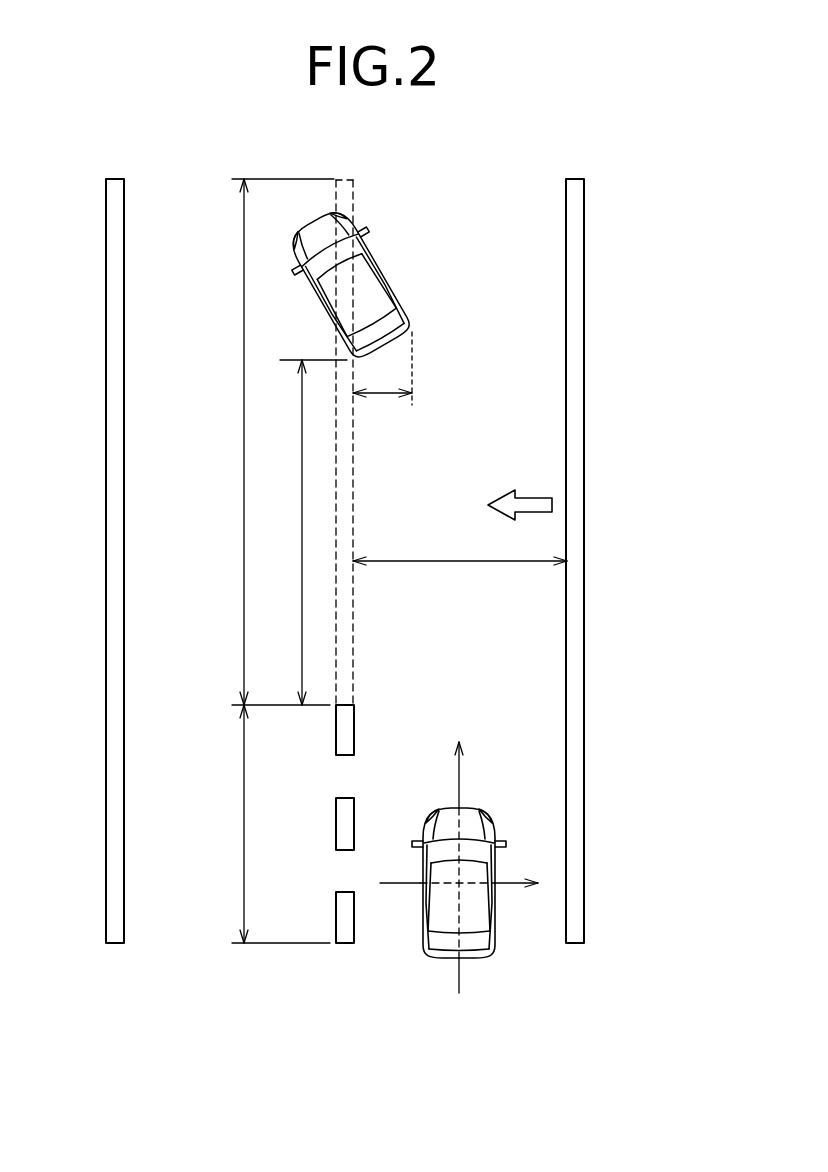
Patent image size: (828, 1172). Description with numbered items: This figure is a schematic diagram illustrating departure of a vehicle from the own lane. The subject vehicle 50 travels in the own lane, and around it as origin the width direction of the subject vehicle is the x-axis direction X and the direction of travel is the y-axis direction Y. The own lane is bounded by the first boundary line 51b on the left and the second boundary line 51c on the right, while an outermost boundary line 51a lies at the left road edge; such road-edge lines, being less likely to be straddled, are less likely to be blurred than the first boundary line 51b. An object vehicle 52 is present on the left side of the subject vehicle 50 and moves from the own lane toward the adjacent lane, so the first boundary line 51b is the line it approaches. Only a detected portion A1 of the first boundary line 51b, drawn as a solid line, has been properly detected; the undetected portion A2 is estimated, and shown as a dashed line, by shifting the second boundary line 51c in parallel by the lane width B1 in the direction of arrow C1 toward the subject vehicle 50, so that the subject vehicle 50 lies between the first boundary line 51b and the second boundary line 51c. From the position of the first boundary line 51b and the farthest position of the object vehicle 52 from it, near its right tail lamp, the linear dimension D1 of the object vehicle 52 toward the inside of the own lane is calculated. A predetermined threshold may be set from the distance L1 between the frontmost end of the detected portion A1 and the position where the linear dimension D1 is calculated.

The subject vehicle 50 is at (492, 824).
The object vehicle 52 is at (395, 289).
The outermost boundary line 51a is at (113, 179).
The first boundary line 51b is at (352, 172).
The second boundary line 51c is at (575, 179).
The detected portion A1 is at (266, 824).
The undetected portion A2 is at (268, 442).
The distance L1 is at (305, 532).
The linear dimension D1 is at (382, 382).
The lane width B1 is at (460, 578).
The arrow C1 is at (535, 498).
The x-axis direction X is at (471, 883).
The y-axis direction Y is at (460, 850).